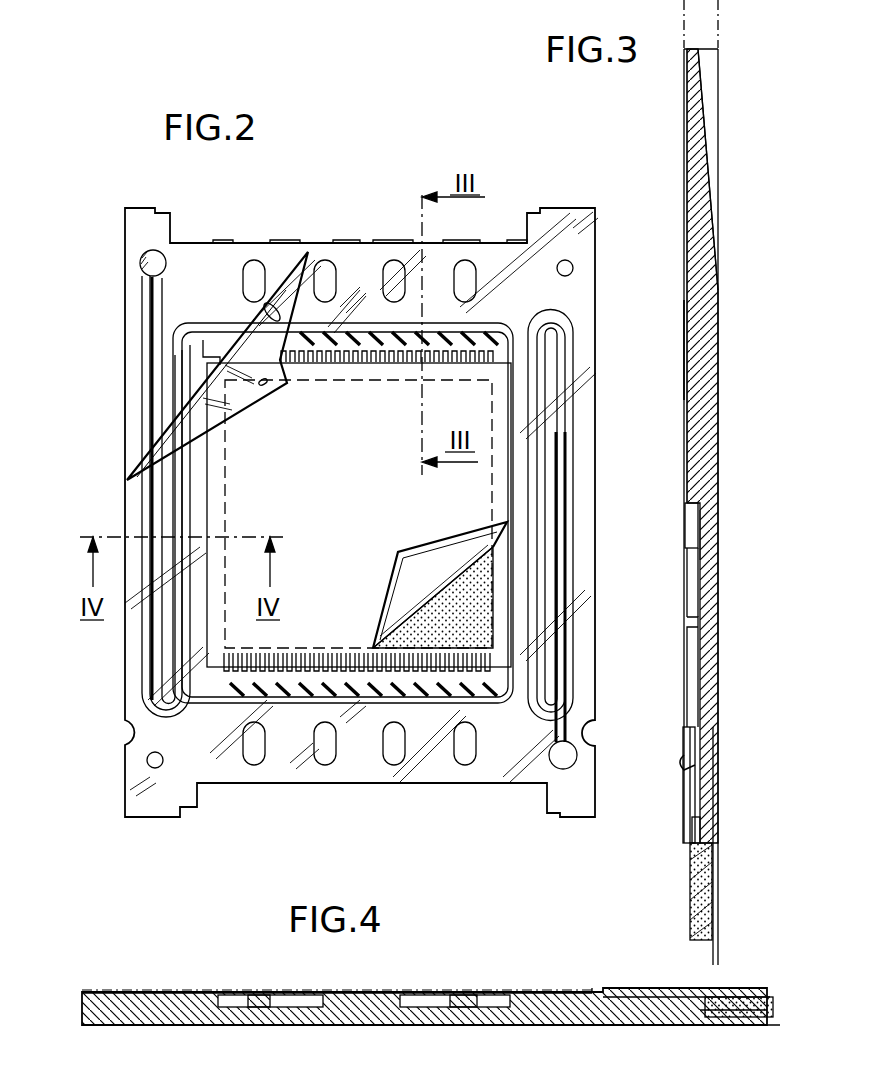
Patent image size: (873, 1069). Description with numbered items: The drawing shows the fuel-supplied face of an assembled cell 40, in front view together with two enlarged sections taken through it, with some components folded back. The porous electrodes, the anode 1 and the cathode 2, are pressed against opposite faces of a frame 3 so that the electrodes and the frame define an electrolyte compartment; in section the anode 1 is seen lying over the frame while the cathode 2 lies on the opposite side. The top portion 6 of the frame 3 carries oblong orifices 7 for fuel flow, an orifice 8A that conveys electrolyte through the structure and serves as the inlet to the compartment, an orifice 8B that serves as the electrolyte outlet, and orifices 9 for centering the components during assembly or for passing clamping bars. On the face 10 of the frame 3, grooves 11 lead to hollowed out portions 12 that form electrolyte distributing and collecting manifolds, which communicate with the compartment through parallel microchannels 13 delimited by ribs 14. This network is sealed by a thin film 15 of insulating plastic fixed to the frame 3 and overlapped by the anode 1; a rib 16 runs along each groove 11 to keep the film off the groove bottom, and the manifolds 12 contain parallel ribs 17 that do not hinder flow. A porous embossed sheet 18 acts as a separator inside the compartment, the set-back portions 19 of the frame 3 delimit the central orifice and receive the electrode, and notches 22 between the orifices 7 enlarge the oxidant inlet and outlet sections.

In FIG. 2, the anode 1 is at (420, 566).
In FIG. 3, the anode 1 is at (692, 832).
In FIG. 4, the anode 1 is at (667, 995).
In FIG. 3, the cathode 2 is at (720, 945).
In FIG. 4, the cathode 2 is at (632, 1026).
In FIG. 2, the frame 3 is at (122, 312).
In FIG. 3, the frame 3 is at (712, 425).
In FIG. 4, the frame 3 is at (175, 1005).
In FIG. 2, the top portion 6 is at (217, 285).
In FIG. 3, the top portion 6 is at (684, 401).
In FIG. 2, the orifices for fuel flow 7 is at (253, 275).
In FIG. 2, the orifice 8A is at (149, 257).
In FIG. 2, the orifice 8B is at (573, 752).
In FIG. 2, the orifices 9 is at (567, 269).
In FIG. 2, the face 10 is at (137, 455).
In FIG. 2, the grooves 11 is at (185, 400).
In FIG. 4, the grooves 11 is at (285, 995).
In FIG. 2, the hollowed out portions 12 is at (233, 340).
In FIG. 3, the hollowed out portions 12 is at (697, 520).
In FIG. 2, the microchannels 13 is at (358, 514).
In FIG. 3, the microchannels 13 is at (693, 714).
In FIG. 2, the ribs 14 is at (372, 660).
In FIG. 3, the ribs 14 is at (697, 641).
In FIG. 2, the thin film 15 is at (243, 392).
In FIG. 3, the thin film 15 is at (686, 501).
In FIG. 4, the thin film 15 is at (222, 990).
In FIG. 2, the rib 16 is at (148, 407).
In FIG. 4, the rib 16 is at (265, 1001).
In FIG. 3, the ribs 17 is at (692, 568).
In FIG. 2, the porous embossed sheet 18 is at (420, 620).
In FIG. 3, the porous embossed sheet 18 is at (713, 882).
In FIG. 4, the porous embossed sheet 18 is at (740, 1013).
In FIG. 2, the set-back portions 19 is at (505, 580).
In FIG. 3, the set-back portions 19 is at (687, 756).
In FIG. 4, the set-back portions 19 is at (650, 1000).
In FIG. 2, the notches 22 is at (358, 243).
In FIG. 3, the notches 22 is at (705, 96).
In FIG. 2, the cell 40 is at (367, 243).
In FIG. 3, the cell 40 is at (683, 212).
In FIG. 4, the cell 40 is at (578, 989).